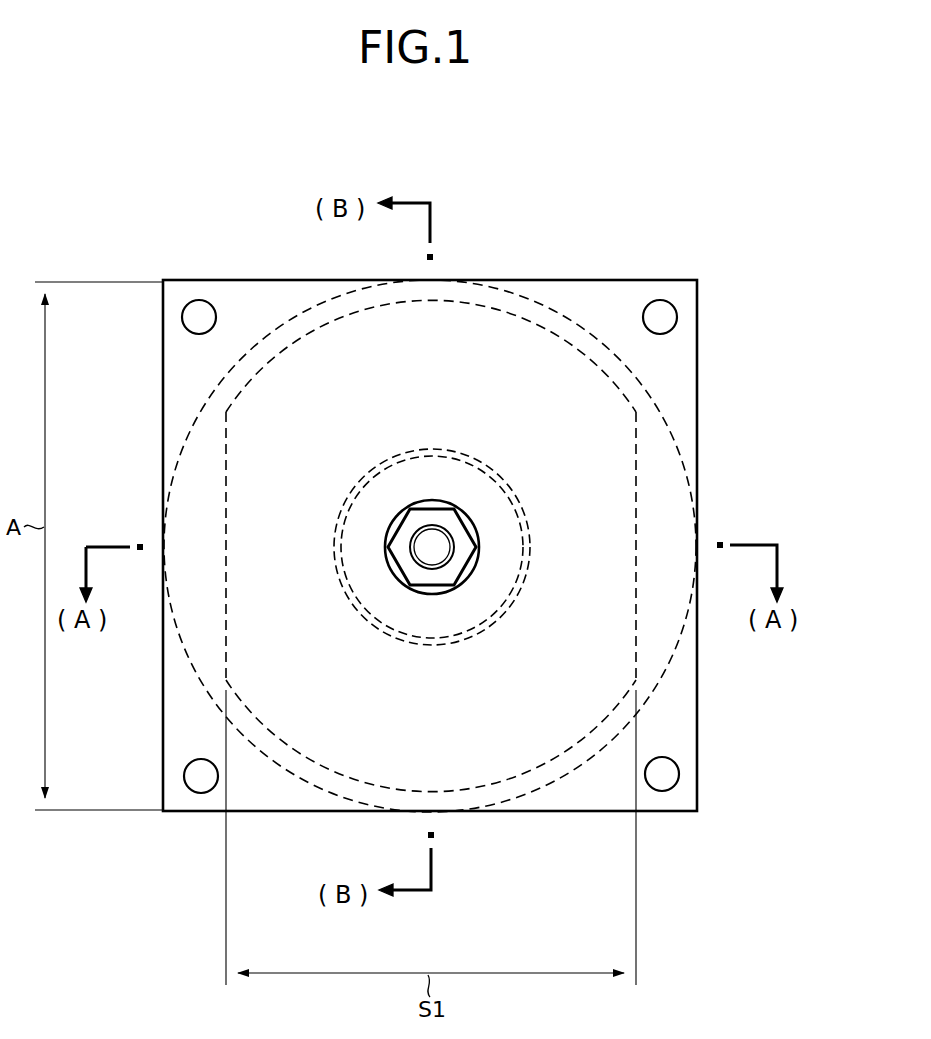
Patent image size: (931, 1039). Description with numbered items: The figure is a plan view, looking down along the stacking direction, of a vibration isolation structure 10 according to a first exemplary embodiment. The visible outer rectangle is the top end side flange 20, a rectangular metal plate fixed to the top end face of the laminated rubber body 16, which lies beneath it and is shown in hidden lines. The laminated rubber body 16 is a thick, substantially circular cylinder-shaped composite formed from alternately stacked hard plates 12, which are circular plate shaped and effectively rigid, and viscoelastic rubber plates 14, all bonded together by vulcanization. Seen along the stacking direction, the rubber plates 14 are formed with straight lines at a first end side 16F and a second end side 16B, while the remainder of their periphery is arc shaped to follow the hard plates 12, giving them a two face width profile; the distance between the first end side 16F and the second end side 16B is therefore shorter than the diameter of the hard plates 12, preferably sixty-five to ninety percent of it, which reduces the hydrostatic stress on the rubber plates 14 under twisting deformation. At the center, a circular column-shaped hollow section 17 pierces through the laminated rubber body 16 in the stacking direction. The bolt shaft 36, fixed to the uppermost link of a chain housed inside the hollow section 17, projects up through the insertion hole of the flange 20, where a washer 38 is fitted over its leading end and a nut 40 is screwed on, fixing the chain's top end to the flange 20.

The vibration isolation structure 10 is at (733, 253).
The hard plate 12 is at (542, 302).
The rubber plate 14 is at (636, 467).
The laminated rubber body 16 is at (693, 621).
The first end side 16F is at (227, 558).
The second end side 16B is at (636, 610).
The hollow section 17 is at (463, 621).
The flange 20 is at (673, 388).
The bolt shaft 36 is at (430, 566).
The washer 38 is at (480, 535).
The nut 40 is at (398, 562).